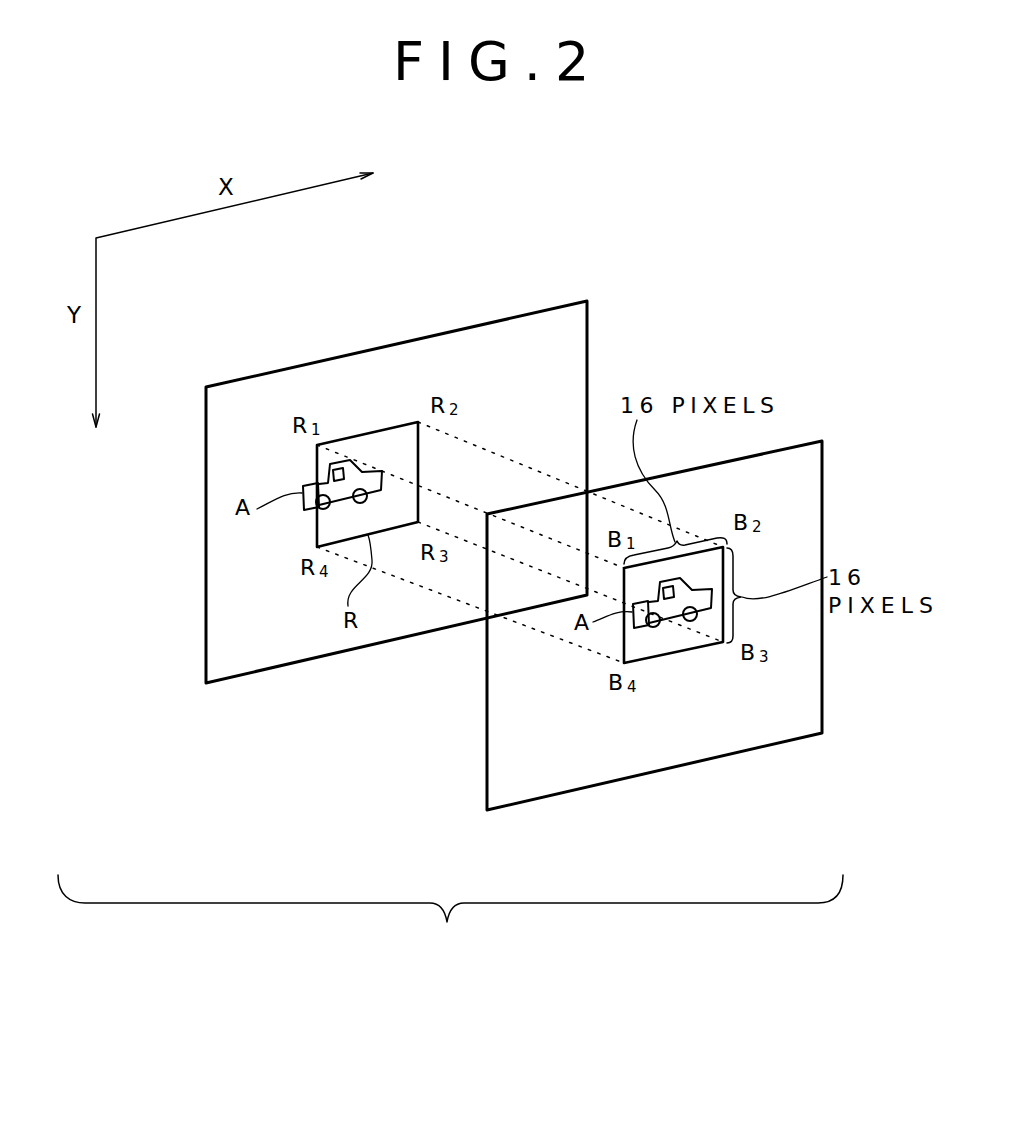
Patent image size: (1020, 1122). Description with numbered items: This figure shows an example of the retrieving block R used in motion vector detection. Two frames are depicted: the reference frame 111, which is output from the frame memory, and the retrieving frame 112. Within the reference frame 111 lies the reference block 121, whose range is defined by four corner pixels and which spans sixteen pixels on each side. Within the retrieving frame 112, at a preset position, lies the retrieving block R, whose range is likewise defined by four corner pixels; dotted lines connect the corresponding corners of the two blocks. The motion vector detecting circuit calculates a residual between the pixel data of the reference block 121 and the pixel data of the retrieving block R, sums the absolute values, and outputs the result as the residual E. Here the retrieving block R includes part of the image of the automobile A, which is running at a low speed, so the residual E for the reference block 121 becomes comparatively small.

The reference frame 111 is at (818, 688).
The retrieving frame 112 is at (589, 349).
The reference block 121 is at (688, 648).